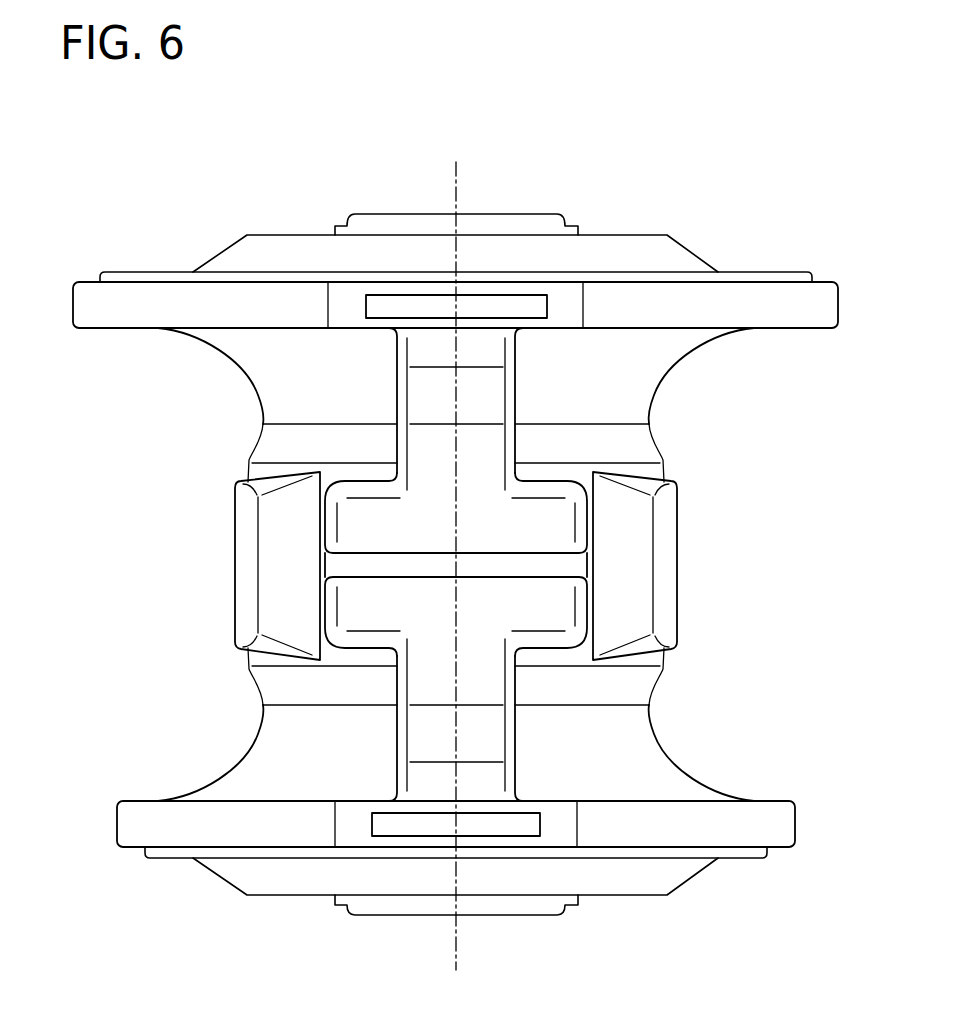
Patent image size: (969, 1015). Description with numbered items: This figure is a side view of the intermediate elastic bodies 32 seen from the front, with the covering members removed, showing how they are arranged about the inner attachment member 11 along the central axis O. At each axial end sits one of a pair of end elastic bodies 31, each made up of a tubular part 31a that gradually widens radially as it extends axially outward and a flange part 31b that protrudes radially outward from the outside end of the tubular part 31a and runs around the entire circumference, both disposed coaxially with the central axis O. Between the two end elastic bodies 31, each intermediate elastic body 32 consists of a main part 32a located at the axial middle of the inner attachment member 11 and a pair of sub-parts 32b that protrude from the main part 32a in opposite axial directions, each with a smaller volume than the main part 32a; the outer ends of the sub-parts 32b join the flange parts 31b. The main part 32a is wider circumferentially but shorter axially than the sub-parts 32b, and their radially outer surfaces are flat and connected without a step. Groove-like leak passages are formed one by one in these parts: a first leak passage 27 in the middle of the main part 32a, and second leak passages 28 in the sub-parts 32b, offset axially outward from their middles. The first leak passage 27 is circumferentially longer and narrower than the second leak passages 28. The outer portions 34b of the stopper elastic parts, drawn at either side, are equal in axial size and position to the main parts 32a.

The central axis O is at (455, 183).
The inner attachment member 11 is at (557, 214).
The first leak passage 27 is at (583, 562).
The second leak passage 28 is at (490, 396).
The end elastic body 31 is at (829, 283).
The tubular part 31a is at (240, 371).
The flange part 31b is at (72, 303).
The intermediate elastic body 32 is at (359, 479).
The main part 32a is at (553, 478).
The sub-part 32b is at (515, 443).
The outer portion 34b is at (235, 537).